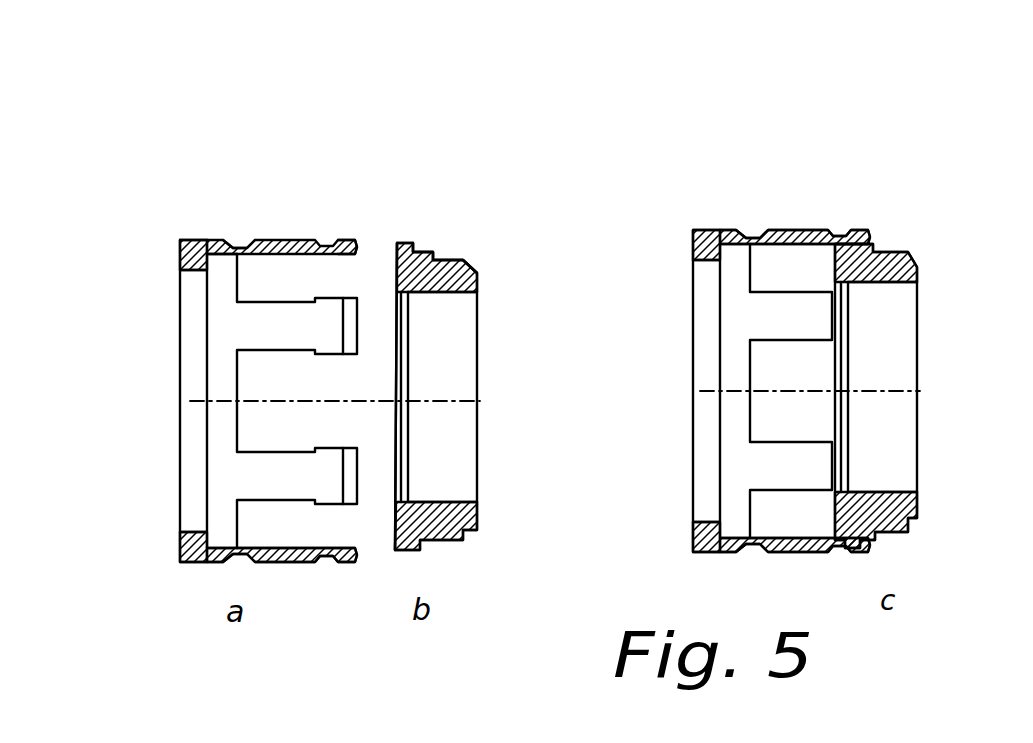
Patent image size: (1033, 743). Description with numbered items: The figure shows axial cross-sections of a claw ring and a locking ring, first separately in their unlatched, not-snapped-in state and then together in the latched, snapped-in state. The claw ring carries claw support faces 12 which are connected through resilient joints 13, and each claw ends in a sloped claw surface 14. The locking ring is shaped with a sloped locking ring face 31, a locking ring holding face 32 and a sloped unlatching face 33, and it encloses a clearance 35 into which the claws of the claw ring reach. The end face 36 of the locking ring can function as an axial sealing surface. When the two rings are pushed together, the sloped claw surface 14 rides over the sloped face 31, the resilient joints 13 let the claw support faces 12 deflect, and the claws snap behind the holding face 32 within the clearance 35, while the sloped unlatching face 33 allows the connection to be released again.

The claw support face 12 is at (343, 240).
The resilient joint 13 is at (240, 240).
The sloped claw surface 14 is at (342, 242).
The sloped locking ring face 31 is at (405, 250).
The locking ring holding face 32 is at (427, 250).
The sloped unlatching face 33 is at (437, 252).
The clearance 35 is at (408, 338).
The end face 36 is at (392, 250).